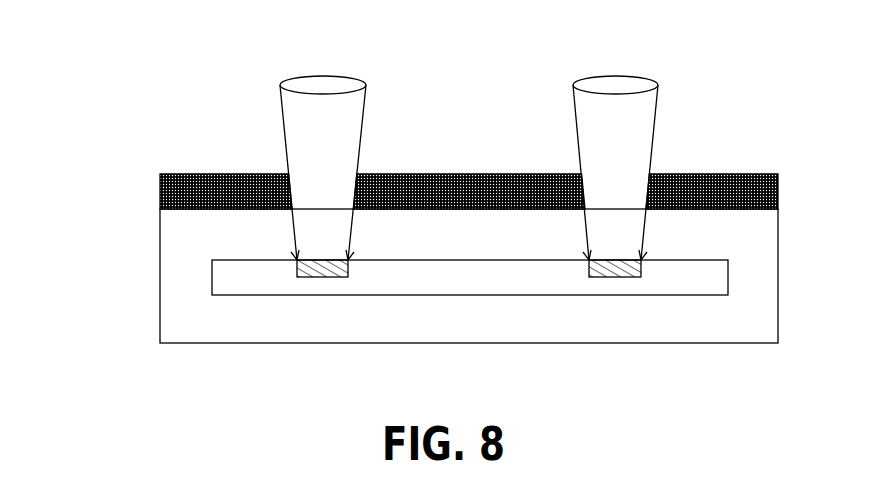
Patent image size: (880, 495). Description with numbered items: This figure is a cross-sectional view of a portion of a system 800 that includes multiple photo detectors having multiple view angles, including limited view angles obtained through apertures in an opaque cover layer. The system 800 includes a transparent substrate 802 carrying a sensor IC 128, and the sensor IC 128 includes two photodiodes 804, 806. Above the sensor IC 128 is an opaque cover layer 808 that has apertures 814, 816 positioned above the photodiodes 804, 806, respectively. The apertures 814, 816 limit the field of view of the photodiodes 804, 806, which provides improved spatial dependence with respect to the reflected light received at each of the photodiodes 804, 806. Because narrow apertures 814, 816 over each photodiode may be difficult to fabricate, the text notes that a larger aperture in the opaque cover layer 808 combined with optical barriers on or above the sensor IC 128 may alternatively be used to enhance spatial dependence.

The system 800 is at (118, 22).
The transparent substrate 802 is at (160, 290).
The opaque cover layer 808 is at (160, 197).
The sensor IC 128 is at (247, 260).
The photodiode 804 is at (325, 277).
The photodiode 806 is at (609, 277).
The aperture 814 is at (304, 168).
The aperture 816 is at (599, 167).